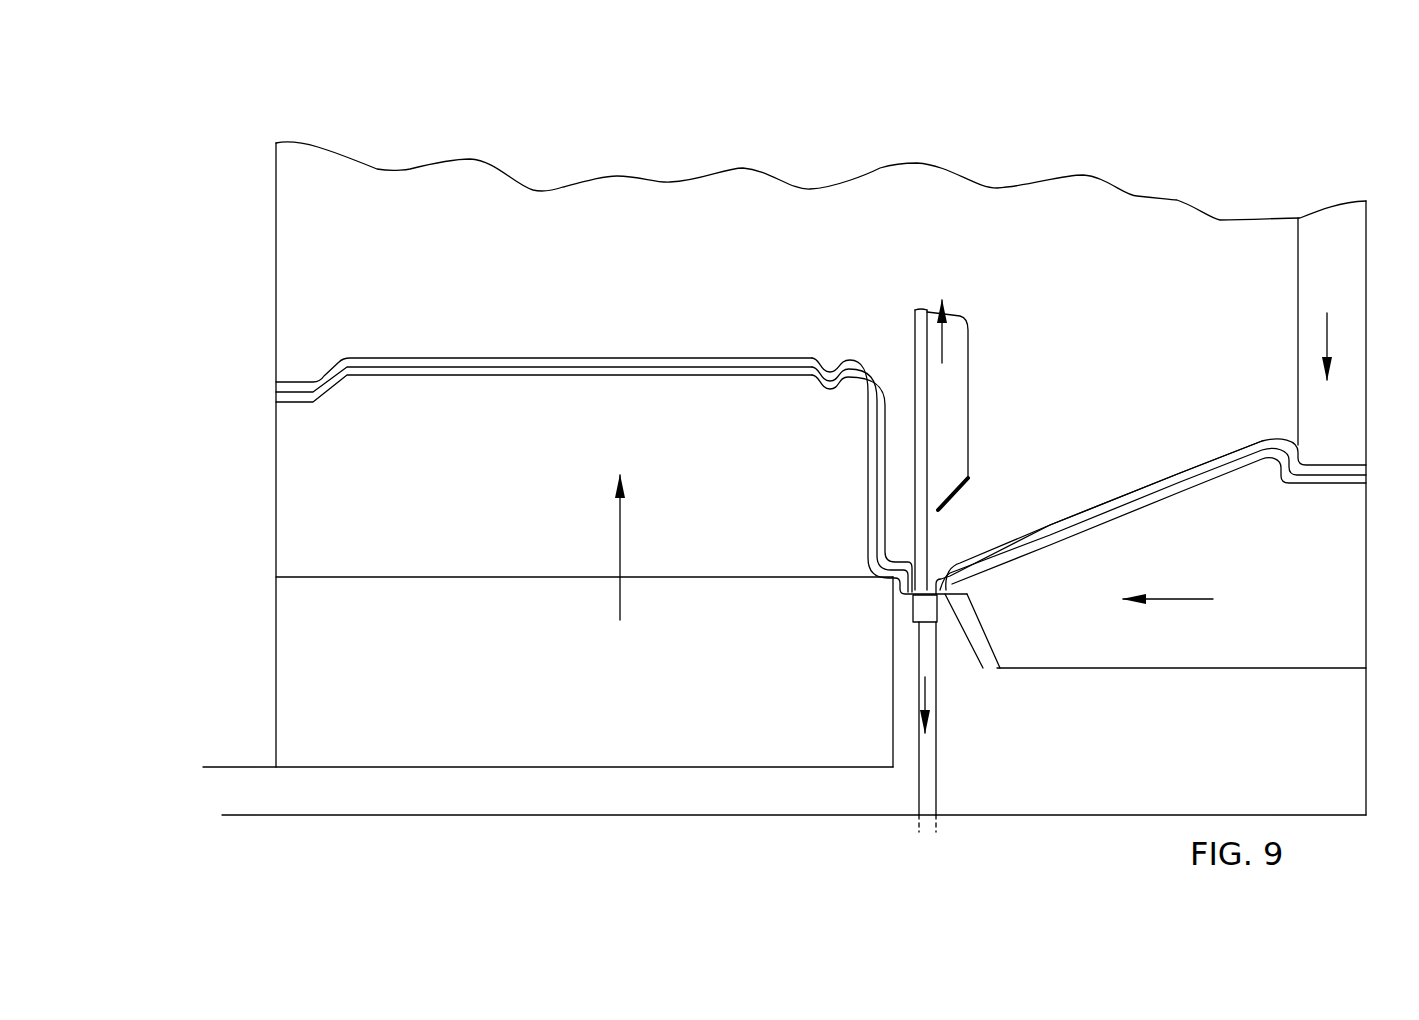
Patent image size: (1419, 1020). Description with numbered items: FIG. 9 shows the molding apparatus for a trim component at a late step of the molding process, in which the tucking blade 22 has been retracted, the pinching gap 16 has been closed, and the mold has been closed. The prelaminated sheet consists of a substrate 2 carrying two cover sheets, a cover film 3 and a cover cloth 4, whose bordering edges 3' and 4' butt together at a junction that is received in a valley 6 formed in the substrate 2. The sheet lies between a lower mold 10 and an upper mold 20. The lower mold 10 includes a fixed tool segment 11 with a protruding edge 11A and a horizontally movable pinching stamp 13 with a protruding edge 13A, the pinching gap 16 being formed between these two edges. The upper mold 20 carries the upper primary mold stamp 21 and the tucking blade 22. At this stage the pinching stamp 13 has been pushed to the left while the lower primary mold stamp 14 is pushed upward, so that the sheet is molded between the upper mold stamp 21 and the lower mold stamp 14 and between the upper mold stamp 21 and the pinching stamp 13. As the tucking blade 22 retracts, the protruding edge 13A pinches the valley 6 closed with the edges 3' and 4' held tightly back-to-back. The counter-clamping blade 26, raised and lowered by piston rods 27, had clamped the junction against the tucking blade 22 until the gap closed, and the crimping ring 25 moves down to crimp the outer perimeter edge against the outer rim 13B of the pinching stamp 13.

The substrate 2 is at (442, 373).
The cover film 3 is at (889, 468).
The bordering edge of the cover film 3' is at (904, 534).
The cover cloth 4 is at (1151, 516).
The bordering edge of the cover cloth 4' is at (954, 535).
The valley 6 is at (964, 637).
The lower mold 10 is at (766, 826).
The fixed tool segment 11 is at (1121, 769).
The protruding edge of the fixed tool segment 11A is at (893, 590).
The pinching stamp 13 is at (1288, 634).
The protruding edge of the pinching stamp 13A is at (953, 581).
The outer rim of the pinching stamp 13B is at (1320, 485).
The lower primary mold stamp 14 is at (533, 554).
The pinching gap 16 is at (960, 635).
The upper mold 20 is at (883, 152).
The upper primary mold stamp 21 is at (736, 296).
The tucking blade 22 is at (926, 455).
The crimping ring 25 is at (1350, 424).
The counter-clamping blade 26 is at (940, 632).
The piston rods 27 is at (928, 770).